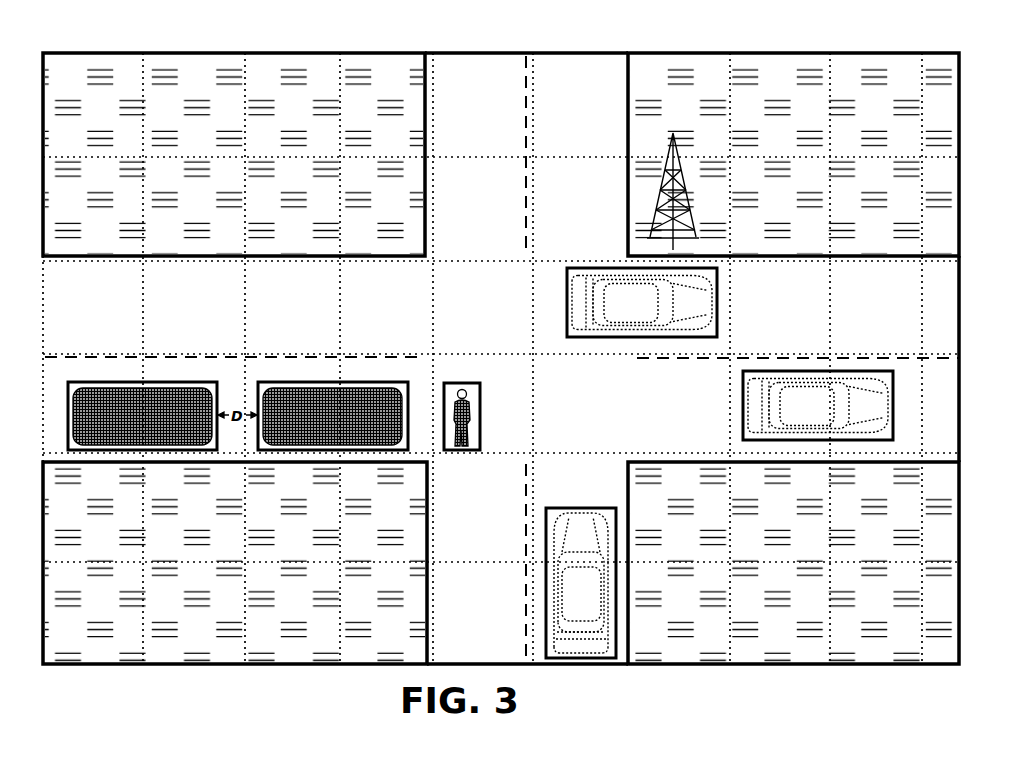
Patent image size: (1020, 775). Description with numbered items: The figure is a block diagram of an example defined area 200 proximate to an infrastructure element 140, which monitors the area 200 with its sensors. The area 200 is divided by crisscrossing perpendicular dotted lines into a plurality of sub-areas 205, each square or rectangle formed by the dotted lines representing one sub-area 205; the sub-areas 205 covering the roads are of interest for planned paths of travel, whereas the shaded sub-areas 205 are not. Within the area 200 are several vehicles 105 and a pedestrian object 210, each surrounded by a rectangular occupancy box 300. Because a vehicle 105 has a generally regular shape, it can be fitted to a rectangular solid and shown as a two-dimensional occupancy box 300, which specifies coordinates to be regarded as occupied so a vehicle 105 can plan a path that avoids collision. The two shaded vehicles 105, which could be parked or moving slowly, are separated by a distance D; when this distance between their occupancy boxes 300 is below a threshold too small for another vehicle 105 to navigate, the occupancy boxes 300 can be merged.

The vehicle 105 is at (86, 396).
The infrastructure element 140 is at (688, 202).
The defined area 200 is at (466, 53).
The sub-area 205 is at (494, 111).
The object or hazard 210 is at (483, 414).
The occupancy box 300 is at (203, 382).